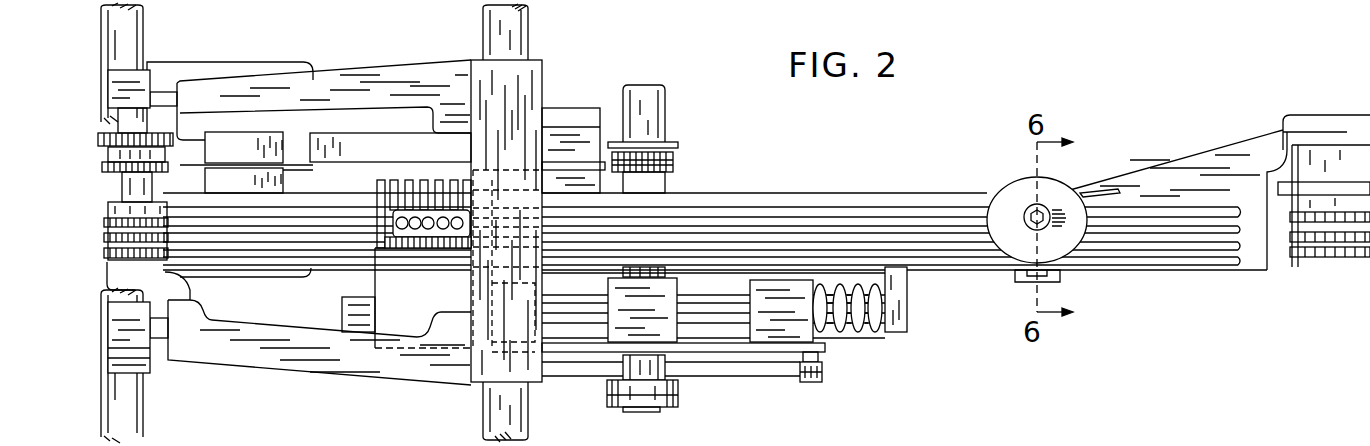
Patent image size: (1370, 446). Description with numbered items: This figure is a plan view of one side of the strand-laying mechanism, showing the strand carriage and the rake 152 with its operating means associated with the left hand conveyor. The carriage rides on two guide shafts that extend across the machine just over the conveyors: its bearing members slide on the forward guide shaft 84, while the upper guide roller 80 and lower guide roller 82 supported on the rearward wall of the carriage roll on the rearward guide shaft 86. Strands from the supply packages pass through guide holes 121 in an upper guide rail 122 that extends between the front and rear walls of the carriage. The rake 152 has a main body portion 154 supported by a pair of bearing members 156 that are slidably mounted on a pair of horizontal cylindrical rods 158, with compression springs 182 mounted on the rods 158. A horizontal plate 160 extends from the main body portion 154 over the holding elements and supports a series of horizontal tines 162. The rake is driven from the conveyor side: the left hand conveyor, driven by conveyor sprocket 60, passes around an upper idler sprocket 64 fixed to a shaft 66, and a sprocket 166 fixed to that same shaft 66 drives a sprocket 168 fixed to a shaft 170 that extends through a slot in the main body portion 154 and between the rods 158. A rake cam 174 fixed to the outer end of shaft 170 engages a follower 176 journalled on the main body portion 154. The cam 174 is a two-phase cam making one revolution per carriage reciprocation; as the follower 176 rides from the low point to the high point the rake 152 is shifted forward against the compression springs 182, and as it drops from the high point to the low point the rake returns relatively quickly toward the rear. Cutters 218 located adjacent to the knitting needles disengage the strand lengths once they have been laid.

The rearward guide shaft 86 is at (128, 23).
The lower guide roller 82 is at (138, 78).
The upper guide roller 80 is at (142, 100).
The forward guide shaft 84 is at (507, 25).
The sprocket 166 is at (160, 163).
The shaft 66 is at (142, 183).
The horizontal tines 162 is at (435, 187).
The shaft 170 is at (648, 110).
The sprocket 168 is at (668, 168).
The cutters 218 is at (1120, 197).
The conveyor sprocket 60 is at (1348, 252).
The upper idler sprocket 64 is at (165, 262).
The upper guide rail 122 is at (402, 233).
The guide holes 121 is at (443, 233).
The horizontal plate 160 is at (388, 312).
The bearing members 156 is at (772, 293).
The compression springs 182 is at (873, 302).
The horizontal cylindrical rods 158 is at (877, 313).
The main body portion 154 is at (820, 345).
The rake cam 174 is at (720, 370).
The follower 176 is at (822, 377).
The rake 152 is at (578, 392).